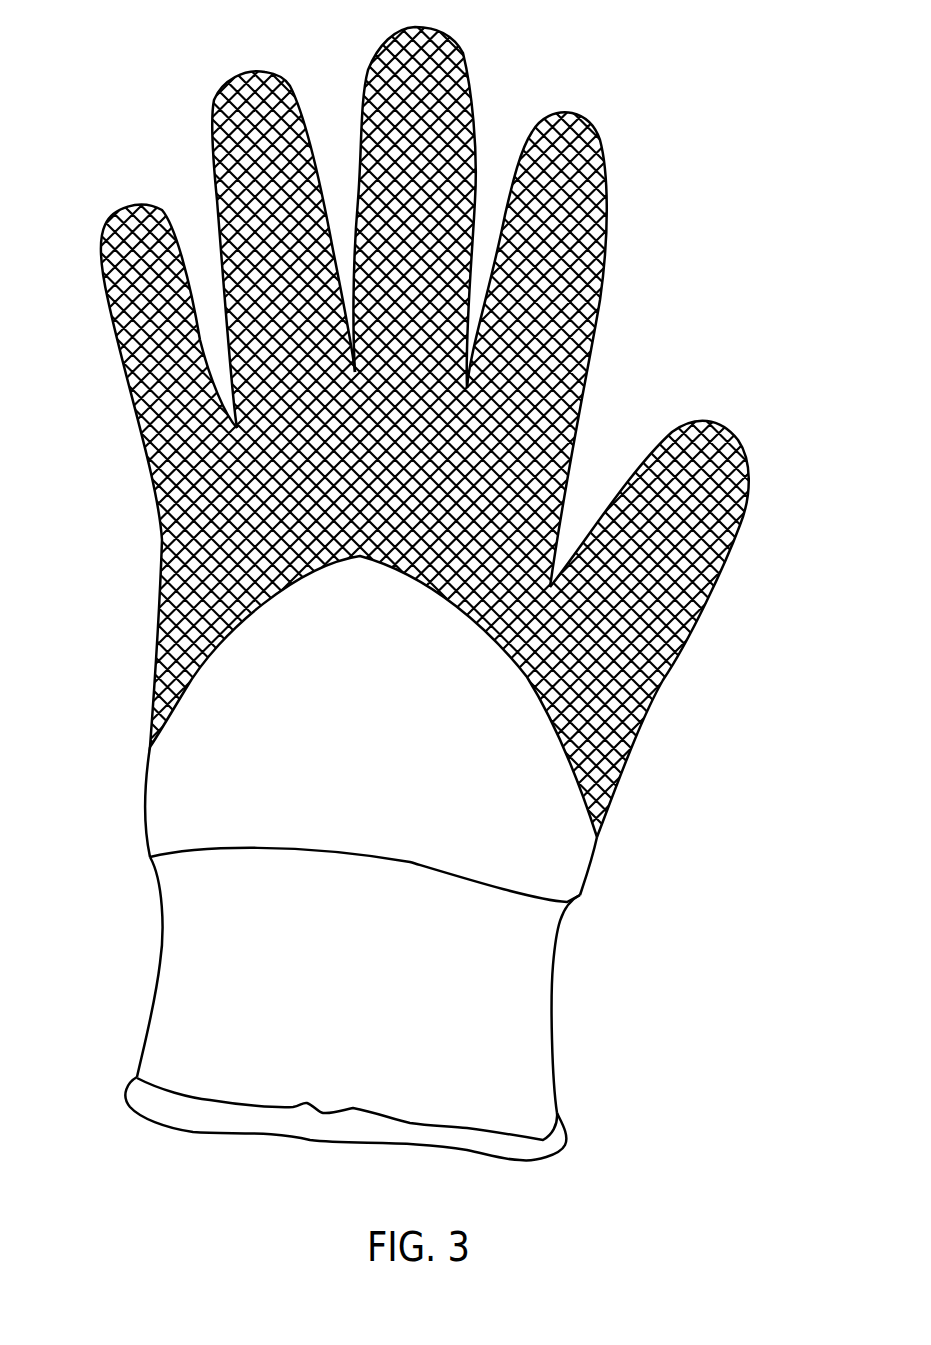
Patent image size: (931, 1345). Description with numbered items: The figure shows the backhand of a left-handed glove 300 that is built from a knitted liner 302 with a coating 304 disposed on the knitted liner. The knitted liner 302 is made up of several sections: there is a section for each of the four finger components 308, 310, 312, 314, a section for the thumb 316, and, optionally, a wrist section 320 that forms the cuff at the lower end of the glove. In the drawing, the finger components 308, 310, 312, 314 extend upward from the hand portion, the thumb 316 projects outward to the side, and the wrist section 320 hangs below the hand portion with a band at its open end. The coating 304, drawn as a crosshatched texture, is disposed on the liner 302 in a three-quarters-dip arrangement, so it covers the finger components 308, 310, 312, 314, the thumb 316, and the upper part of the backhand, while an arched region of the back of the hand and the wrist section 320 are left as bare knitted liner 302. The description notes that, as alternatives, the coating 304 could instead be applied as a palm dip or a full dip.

The glove 300 is at (102, 106).
The knitted liner 302 is at (213, 786).
The coating 304 is at (582, 260).
The finger component 308 is at (600, 138).
The finger component 310 is at (466, 84).
The finger component 312 is at (283, 84).
The finger component 314 is at (141, 203).
The thumb 316 is at (740, 462).
The wrist section 320 is at (528, 1030).